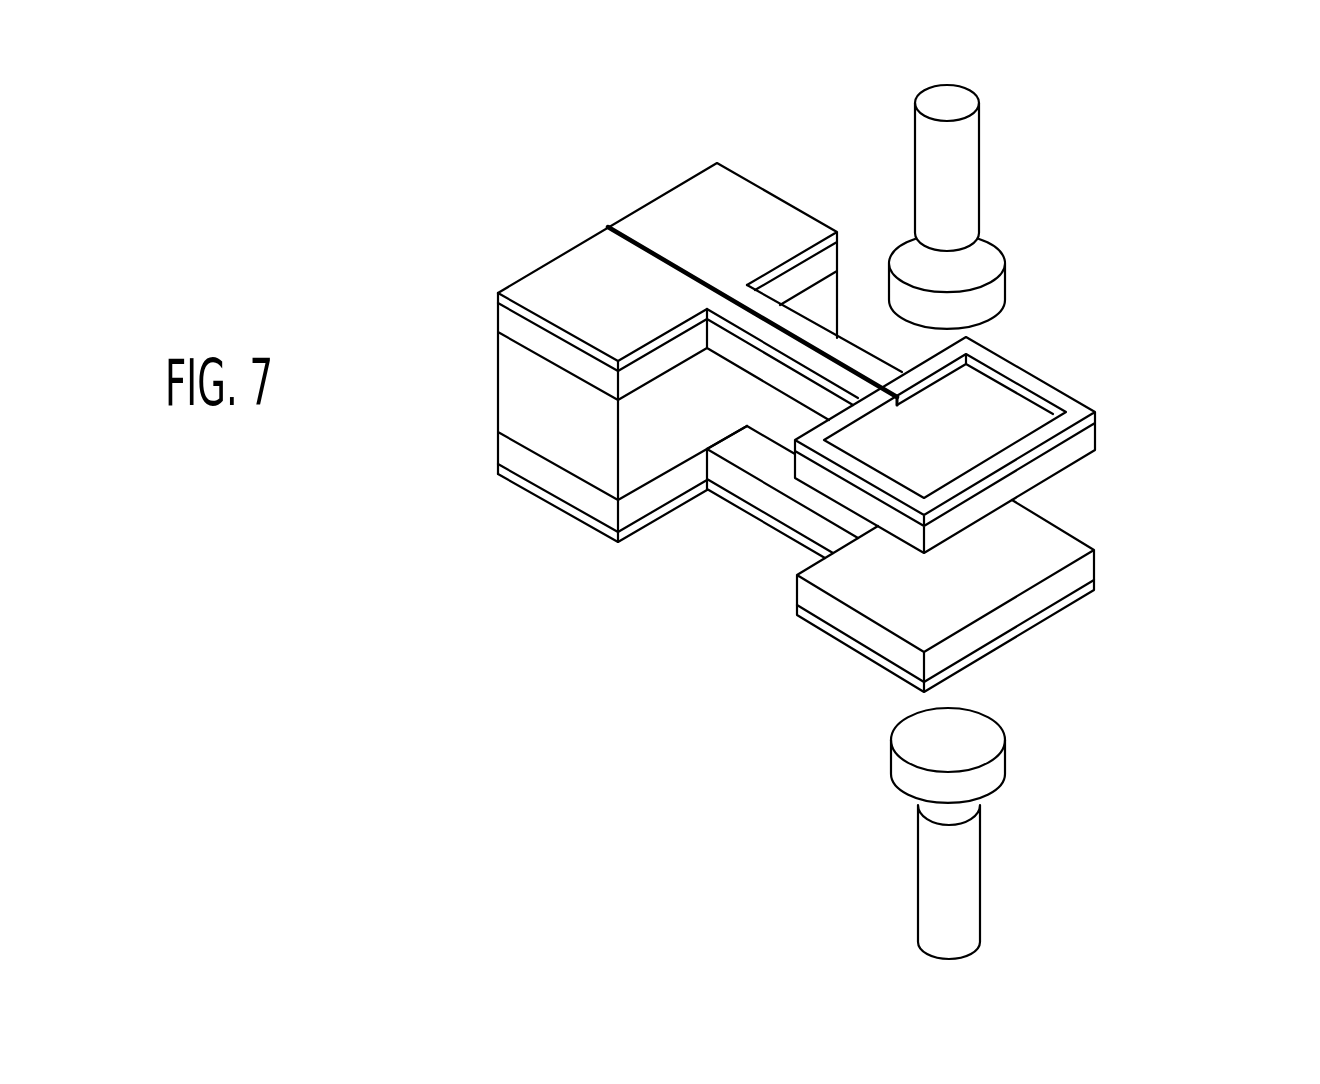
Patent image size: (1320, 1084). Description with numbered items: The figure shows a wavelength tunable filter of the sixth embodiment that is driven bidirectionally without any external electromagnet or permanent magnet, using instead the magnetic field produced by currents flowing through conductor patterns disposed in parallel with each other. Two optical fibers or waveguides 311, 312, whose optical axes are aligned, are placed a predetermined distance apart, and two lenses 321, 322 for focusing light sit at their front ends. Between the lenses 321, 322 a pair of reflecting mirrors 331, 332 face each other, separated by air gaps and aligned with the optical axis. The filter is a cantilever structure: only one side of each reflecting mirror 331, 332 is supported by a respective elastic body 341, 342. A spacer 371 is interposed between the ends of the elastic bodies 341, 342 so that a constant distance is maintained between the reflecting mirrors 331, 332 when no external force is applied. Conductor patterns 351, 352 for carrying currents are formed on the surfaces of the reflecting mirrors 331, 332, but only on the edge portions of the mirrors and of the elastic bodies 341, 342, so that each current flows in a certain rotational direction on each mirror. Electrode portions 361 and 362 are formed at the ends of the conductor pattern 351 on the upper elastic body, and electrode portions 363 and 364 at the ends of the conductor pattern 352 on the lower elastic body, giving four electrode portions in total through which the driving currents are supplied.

The optical fiber or waveguide 311 is at (950, 163).
The optical fiber or waveguide 312 is at (930, 886).
The lens 321 is at (995, 288).
The lens 322 is at (912, 780).
The reflecting mirror 331 is at (1087, 450).
The reflecting mirror 332 is at (1062, 548).
The elastic body 341 is at (743, 357).
The elastic body 342 is at (818, 505).
The conductor pattern 351 is at (853, 357).
The conductor pattern 352 is at (1012, 635).
The electrode portion 361 is at (702, 212).
The electrode portion 362 is at (570, 280).
The electrode portion 363 is at (792, 439).
The electrode portion 364 is at (547, 497).
The spacer 371 is at (508, 403).